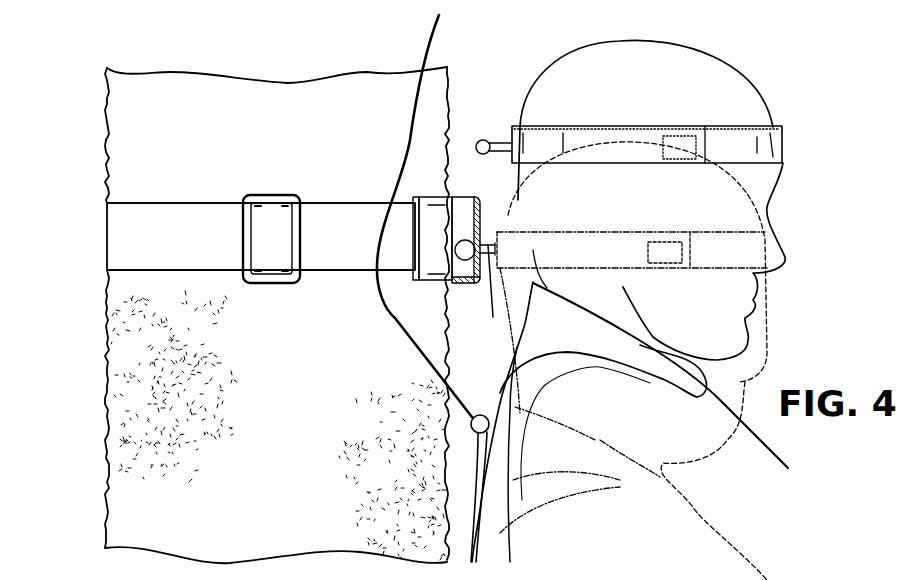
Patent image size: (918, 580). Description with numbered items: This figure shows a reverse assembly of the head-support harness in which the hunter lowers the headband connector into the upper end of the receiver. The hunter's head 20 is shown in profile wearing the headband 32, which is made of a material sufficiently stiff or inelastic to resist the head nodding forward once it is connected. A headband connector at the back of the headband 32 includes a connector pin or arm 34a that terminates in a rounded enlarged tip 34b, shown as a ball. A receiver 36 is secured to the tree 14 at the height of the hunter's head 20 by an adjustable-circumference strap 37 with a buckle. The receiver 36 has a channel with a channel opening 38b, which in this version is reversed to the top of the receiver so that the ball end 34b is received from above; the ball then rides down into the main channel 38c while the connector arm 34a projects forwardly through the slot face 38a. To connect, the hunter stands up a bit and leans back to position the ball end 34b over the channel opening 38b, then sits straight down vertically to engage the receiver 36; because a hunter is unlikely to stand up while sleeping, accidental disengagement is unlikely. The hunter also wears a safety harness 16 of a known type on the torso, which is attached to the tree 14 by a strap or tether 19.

The tree 14 is at (228, 108).
The safety harness 16 is at (493, 453).
The strap or tether 19 is at (413, 128).
The head 20 is at (640, 87).
The headband 32 is at (637, 163).
The connector pin or arm 34a is at (519, 128).
The rounded enlarged tip 34b is at (499, 140).
The receiver 36 is at (477, 397).
The adjustable-circumference strap 37 is at (130, 245).
The slot face 38a is at (469, 292).
The channel opening 38b is at (462, 196).
The main channel 38c is at (470, 244).